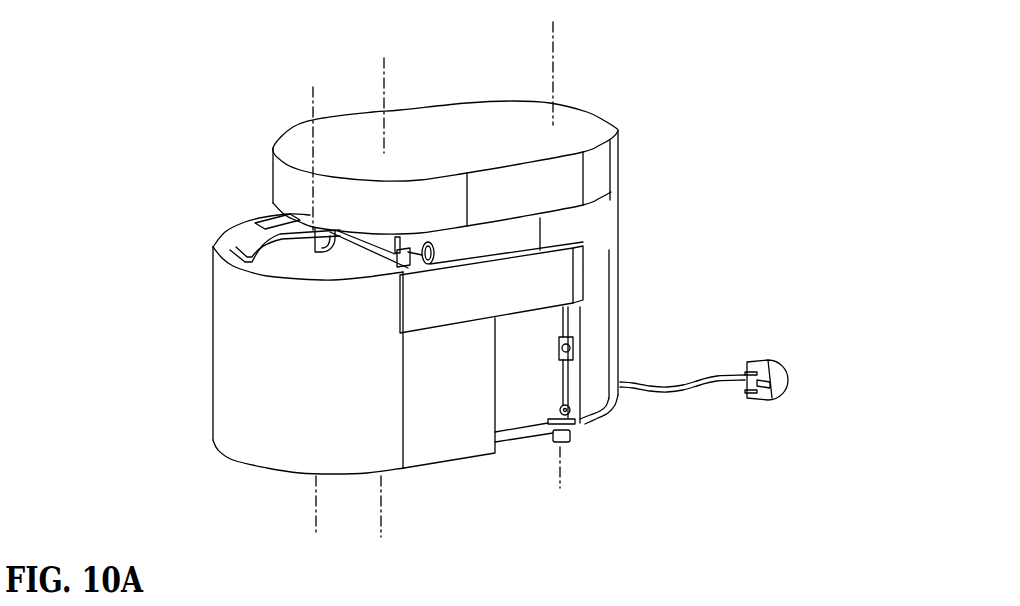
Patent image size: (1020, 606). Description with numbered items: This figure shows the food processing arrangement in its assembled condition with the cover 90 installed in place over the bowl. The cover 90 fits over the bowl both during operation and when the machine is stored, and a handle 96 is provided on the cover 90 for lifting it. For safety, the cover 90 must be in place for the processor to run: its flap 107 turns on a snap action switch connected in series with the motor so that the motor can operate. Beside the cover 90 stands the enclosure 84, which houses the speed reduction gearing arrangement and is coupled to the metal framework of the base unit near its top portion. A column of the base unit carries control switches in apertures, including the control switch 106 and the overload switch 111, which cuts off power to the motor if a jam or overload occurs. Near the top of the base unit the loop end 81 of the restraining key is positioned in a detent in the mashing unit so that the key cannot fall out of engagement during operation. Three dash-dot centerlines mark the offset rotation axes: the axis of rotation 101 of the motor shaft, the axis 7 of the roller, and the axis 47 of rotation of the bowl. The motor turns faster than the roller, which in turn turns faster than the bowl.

The axis 7 is at (366, 60).
The axis of rotation of the bowl 47 is at (296, 97).
The loop end 81 is at (442, 249).
The enclosure 84 is at (604, 123).
The cover 90 is at (224, 321).
The handle 96 is at (261, 228).
The axis of rotation of the motor shaft 101 is at (574, 35).
The control switch 106 is at (580, 344).
The flap 107 is at (562, 287).
The overload switch 111 is at (580, 402).